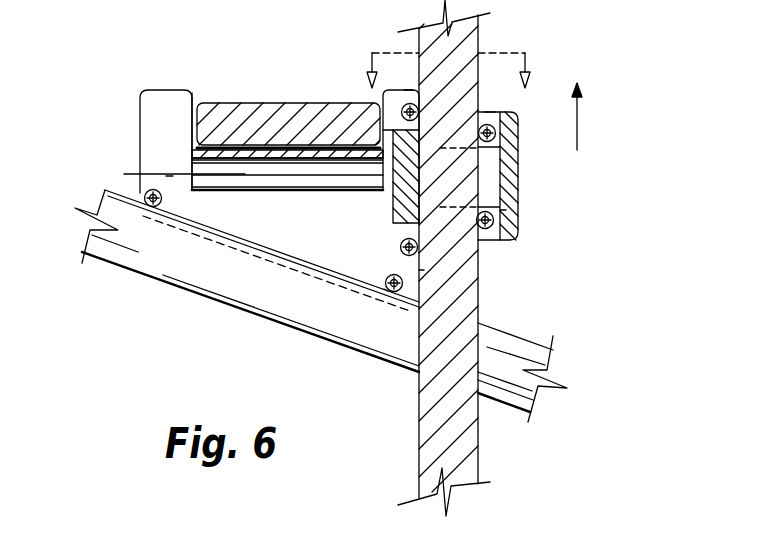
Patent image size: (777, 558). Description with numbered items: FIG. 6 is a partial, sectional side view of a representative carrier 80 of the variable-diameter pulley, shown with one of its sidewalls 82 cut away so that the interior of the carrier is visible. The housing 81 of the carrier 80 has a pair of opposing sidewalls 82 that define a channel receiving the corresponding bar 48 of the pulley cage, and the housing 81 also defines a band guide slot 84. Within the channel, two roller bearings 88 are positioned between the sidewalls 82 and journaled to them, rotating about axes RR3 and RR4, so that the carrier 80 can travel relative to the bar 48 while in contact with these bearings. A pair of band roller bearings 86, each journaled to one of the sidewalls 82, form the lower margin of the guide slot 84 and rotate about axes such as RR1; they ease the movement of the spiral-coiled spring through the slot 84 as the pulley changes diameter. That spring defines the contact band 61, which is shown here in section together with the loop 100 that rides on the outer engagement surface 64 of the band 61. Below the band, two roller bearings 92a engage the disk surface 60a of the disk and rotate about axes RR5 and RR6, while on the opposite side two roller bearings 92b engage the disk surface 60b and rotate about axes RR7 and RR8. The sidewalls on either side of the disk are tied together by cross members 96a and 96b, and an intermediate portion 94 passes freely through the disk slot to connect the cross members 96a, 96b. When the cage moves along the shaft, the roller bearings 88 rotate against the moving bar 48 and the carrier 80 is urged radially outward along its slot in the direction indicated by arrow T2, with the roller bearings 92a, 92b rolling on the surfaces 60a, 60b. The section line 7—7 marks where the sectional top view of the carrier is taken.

The carrier 80 is at (141, 91).
The housing 81 is at (140, 112).
The band guide slot 84 is at (194, 100).
The contact band 61 is at (260, 138).
The loop 100 is at (262, 153).
The outer engagement surface 64 is at (312, 150).
The sidewalls 82 is at (322, 226).
The band roller bearings 86 is at (254, 186).
The roller bearings 92a is at (386, 100).
The roller bearings 92b is at (491, 112).
The roller bearings 88 is at (163, 198).
The cross member 96a is at (396, 216).
The cross member 96b is at (520, 190).
The intermediate portion 94 is at (518, 175).
The bar 48 is at (140, 262).
The disk surface 60a is at (418, 385).
The disk surface 60b is at (478, 438).
The section line 7— 7 is at (450, 53).
The arrow T2 is at (580, 133).
The axis RR1 is at (173, 176).
The axis RR3 is at (384, 289).
The axis RR4 is at (118, 172).
The axis RR5 is at (417, 90).
The axis RR6 is at (424, 270).
The axis RR7 is at (493, 112).
The axis RR8 is at (506, 210).